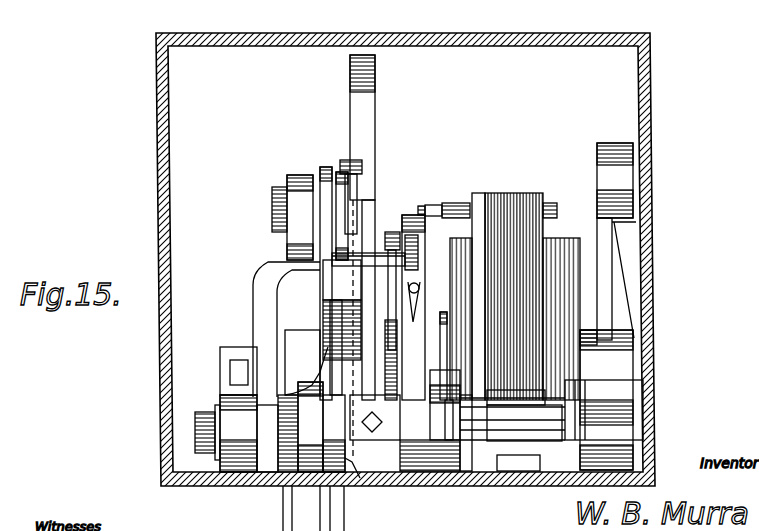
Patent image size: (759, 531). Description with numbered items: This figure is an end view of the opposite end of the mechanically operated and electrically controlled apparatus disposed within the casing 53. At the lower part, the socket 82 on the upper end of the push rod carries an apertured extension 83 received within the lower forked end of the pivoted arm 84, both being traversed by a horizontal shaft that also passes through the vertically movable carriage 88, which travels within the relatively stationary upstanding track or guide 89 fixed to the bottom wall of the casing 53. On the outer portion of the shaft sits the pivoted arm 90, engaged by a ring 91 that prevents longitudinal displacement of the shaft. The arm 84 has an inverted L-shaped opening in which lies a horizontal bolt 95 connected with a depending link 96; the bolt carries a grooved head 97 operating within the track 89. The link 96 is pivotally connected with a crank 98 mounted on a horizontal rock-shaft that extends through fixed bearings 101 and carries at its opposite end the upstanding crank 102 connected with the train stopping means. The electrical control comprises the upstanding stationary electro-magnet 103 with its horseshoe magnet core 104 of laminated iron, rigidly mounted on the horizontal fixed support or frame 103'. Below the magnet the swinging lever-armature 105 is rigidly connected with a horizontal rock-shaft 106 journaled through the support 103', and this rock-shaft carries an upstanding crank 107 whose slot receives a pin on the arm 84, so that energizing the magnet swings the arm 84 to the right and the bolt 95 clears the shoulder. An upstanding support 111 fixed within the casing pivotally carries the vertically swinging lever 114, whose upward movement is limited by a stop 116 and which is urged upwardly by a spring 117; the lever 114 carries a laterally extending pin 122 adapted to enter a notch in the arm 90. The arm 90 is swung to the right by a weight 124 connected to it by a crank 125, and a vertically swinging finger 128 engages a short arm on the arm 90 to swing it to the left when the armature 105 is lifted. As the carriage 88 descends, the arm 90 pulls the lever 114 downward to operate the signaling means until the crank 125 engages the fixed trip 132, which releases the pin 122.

The casing 53 is at (652, 130).
The socket 82 is at (338, 514).
The apertured extension 83 is at (311, 427).
The pivoted arm 84 is at (330, 312).
The carriage 88 is at (352, 462).
The track or guide 89 is at (367, 92).
The pivoted arm 90 is at (390, 232).
The ring 91 is at (405, 400).
The bolt 95 is at (312, 175).
The depending link 96 is at (262, 285).
The grooved head 97 is at (342, 165).
The crank 98 is at (236, 409).
The fixed bearings 101 is at (590, 322).
The upstanding crank 102 is at (610, 143).
The electro-magnet 103 is at (580, 319).
The support or frame 103' is at (586, 374).
The horseshoe magnet core 104 is at (508, 208).
The lever-armature 105 is at (510, 400).
The rock-shaft 106 is at (424, 455).
The upstanding crank 107 is at (350, 190).
The upstanding support 111 is at (420, 255).
The vertically swinging lever 114 is at (412, 268).
The stop 116 is at (415, 215).
The spring 117 is at (415, 306).
The pin 122 is at (320, 262).
The weight 124 is at (430, 415).
The crank 125 is at (392, 330).
The vertically swinging finger 128 is at (447, 315).
The fixed trip 132 is at (448, 402).